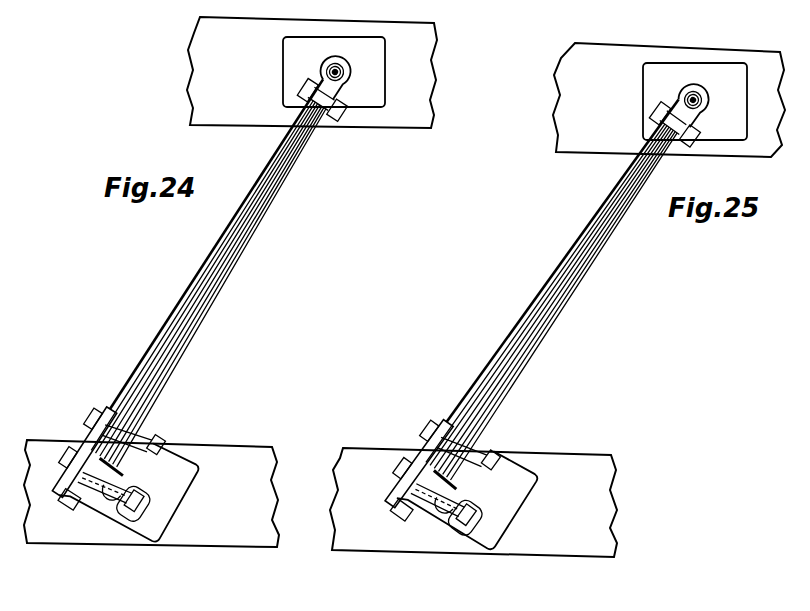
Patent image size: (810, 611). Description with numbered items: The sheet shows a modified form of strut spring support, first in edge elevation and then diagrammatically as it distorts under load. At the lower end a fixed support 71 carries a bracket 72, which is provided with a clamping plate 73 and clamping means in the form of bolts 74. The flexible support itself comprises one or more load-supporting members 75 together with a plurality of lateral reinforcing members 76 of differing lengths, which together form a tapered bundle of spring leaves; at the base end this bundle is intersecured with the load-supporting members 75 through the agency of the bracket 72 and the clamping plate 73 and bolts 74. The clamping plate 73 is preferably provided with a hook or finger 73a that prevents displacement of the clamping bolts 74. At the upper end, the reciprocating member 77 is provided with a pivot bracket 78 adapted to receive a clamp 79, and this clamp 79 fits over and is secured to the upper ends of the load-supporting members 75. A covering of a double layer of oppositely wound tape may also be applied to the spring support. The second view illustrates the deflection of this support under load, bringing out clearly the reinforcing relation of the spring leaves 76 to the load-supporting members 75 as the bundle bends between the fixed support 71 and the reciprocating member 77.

In FIG. 24, the fixed support 71 is at (151, 493).
In FIG. 25, the fixed support 71 is at (473, 502).
In FIG. 24, the bracket 72 is at (131, 482).
In FIG. 25, the bracket 72 is at (470, 489).
In FIG. 24, the clamping plate 73 is at (104, 422).
In FIG. 25, the clamping plate 73 is at (427, 454).
In FIG. 24, the hook or finger 73a is at (70, 497).
In FIG. 25, the hook or finger 73a is at (411, 511).
In FIG. 24, the bolts 74 is at (156, 451).
In FIG. 25, the bolts 74 is at (440, 443).
In FIG. 24, the load-supporting members 75 is at (218, 265).
In FIG. 25, the load-supporting members 75 is at (552, 287).
In FIG. 24, the lateral reinforcing members 76 is at (258, 254).
In FIG. 25, the lateral reinforcing members 76 is at (592, 267).
In FIG. 24, the reciprocating member 77 is at (312, 72).
In FIG. 25, the reciprocating member 77 is at (669, 100).
In FIG. 24, the pivot bracket 78 is at (330, 66).
In FIG. 25, the pivot bracket 78 is at (701, 112).
In FIG. 24, the clamp 79 is at (349, 76).
In FIG. 25, the clamp 79 is at (706, 97).